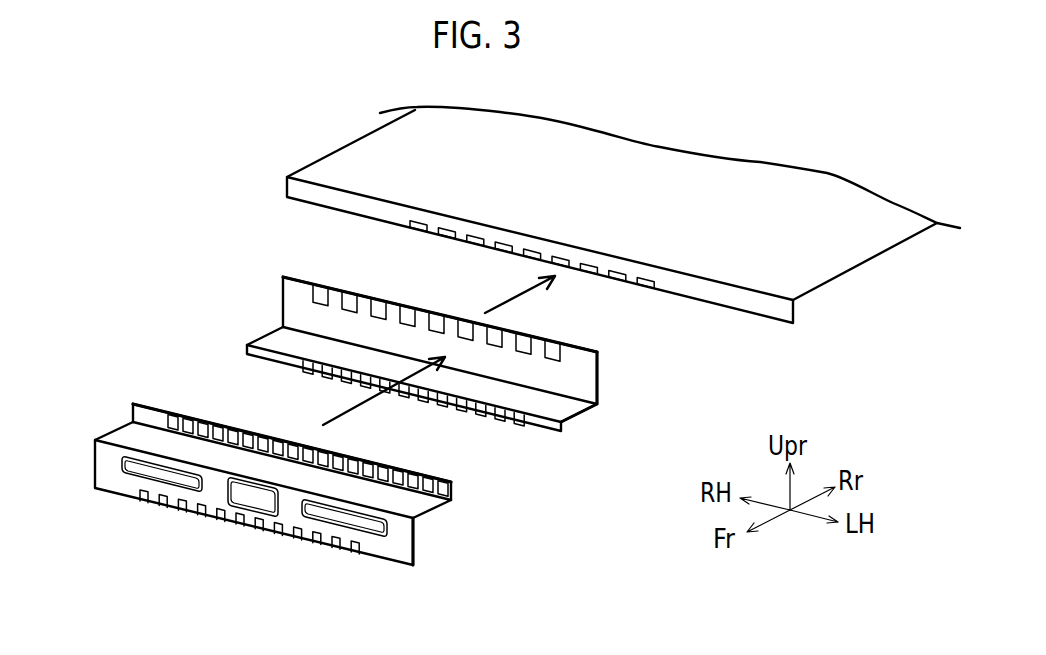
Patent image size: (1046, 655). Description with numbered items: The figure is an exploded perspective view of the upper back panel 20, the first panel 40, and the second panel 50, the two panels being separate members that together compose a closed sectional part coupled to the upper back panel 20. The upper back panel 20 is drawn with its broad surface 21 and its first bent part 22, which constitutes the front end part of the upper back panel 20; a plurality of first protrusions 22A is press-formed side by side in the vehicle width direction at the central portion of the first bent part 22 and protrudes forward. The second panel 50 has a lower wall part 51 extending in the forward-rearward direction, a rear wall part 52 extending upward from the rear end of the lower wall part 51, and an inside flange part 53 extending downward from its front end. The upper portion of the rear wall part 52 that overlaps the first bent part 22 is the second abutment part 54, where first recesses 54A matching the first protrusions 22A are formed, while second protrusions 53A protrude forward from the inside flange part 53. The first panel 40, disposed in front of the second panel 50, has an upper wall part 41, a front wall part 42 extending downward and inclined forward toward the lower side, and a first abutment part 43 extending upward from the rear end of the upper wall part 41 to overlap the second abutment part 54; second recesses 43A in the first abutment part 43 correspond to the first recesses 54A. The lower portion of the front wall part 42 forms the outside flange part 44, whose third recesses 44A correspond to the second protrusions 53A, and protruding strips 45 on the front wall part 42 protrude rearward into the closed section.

The upper back panel 20 is at (294, 124).
The panel top surface 21 is at (593, 143).
The first bent part 22 is at (285, 196).
The first protrusions 22A is at (478, 235).
The second panel 50 is at (185, 261).
The lower wall part 51 is at (273, 343).
The rear wall part 52 is at (290, 302).
The inside flange part 53 is at (260, 362).
The second protrusions 53A is at (493, 413).
The second abutment part 54 is at (578, 373).
The first recesses 54A is at (383, 294).
The first panel 40 is at (79, 345).
The upper wall part 41 is at (123, 432).
The front wall part 42 is at (102, 467).
The first abutment part 43 is at (138, 415).
The second recesses 43A is at (227, 422).
The outside flange part 44 is at (398, 547).
The third recesses 44A is at (333, 533).
The protruding strips 45 is at (140, 468).